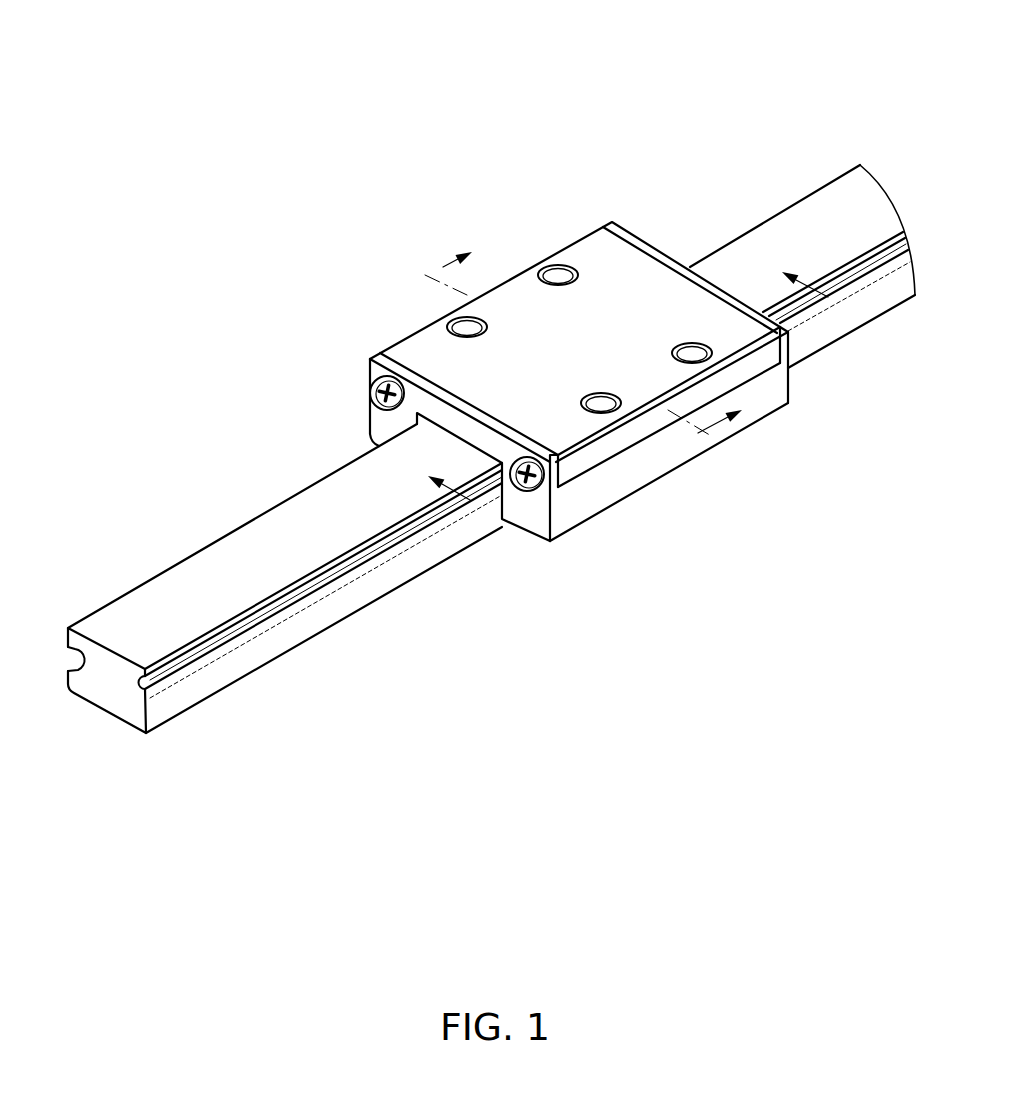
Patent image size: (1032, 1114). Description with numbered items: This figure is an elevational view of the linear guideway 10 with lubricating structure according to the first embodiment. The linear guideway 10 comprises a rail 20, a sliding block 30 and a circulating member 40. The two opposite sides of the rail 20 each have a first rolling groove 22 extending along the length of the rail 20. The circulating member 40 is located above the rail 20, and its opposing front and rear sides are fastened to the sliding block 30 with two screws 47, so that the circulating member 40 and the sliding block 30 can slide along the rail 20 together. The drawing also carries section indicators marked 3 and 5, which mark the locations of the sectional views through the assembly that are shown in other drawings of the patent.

The linear guideway 10 is at (664, 88).
The rail 20 is at (90, 734).
The first rolling groove 22 is at (68, 670).
The sliding block 30 is at (598, 258).
The circulating member 40 is at (602, 493).
The screw 47 is at (372, 392).
The section line of FIG. 3 is at (589, 347).
The section line of FIG. 5 is at (613, 378).